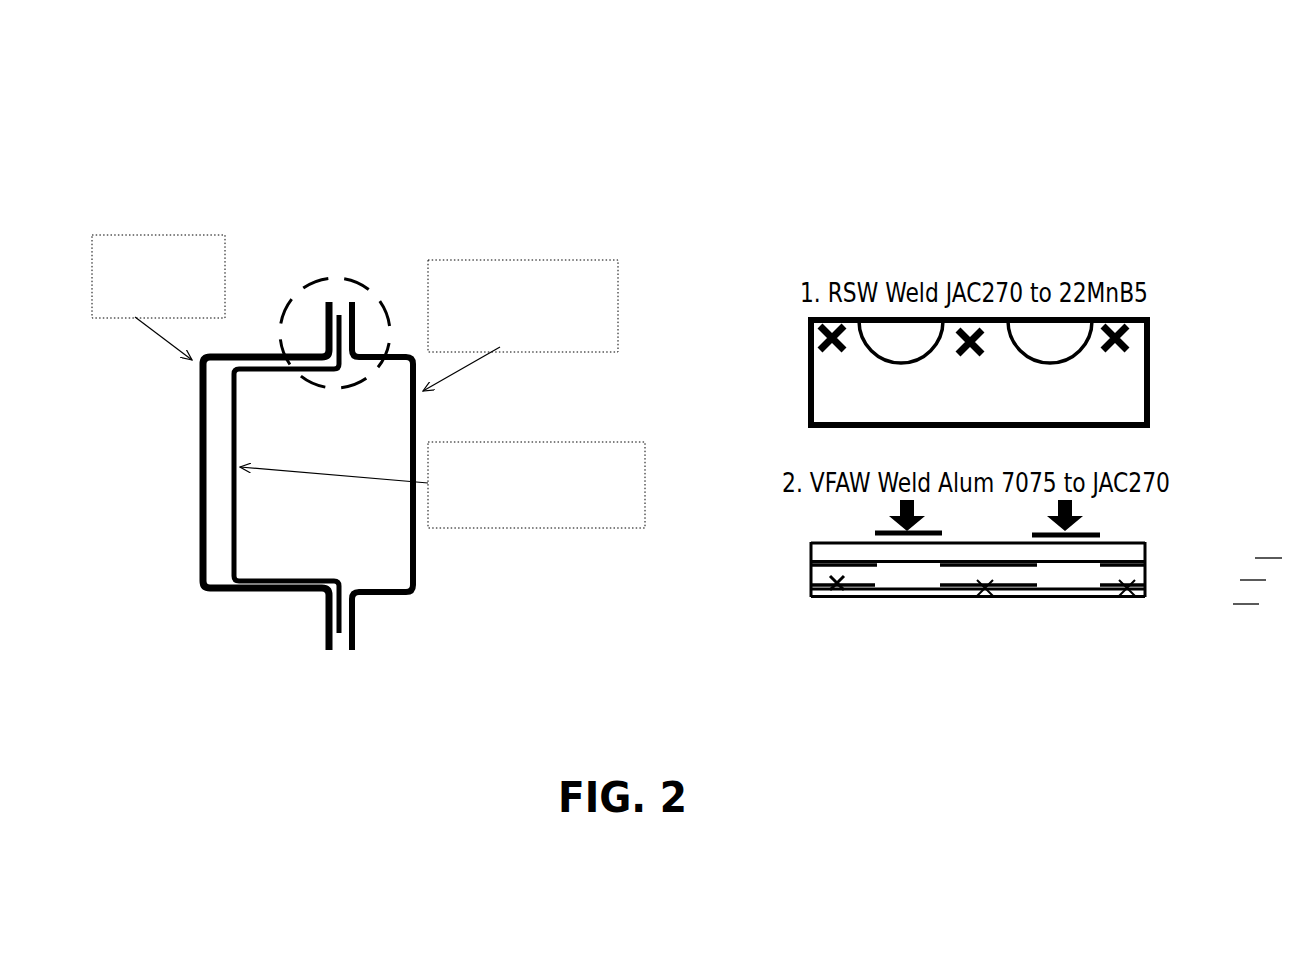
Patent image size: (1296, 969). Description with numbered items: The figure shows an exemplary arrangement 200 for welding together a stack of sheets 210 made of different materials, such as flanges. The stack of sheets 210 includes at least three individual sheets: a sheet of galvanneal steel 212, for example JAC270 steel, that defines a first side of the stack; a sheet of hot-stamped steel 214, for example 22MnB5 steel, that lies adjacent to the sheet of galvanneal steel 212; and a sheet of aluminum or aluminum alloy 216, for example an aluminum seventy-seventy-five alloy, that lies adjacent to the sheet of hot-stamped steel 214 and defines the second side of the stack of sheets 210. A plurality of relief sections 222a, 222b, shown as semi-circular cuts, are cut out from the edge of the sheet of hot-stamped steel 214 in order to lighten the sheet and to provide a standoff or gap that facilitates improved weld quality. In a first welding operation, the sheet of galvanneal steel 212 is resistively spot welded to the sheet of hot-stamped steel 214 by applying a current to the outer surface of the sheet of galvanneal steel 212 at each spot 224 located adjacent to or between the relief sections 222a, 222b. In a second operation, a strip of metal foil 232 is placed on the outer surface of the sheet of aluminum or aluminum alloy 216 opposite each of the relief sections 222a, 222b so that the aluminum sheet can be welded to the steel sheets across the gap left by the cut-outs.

The multi-material joint assembly 200 is at (92, 72).
The stack of sheets 210 is at (310, 280).
The sheet of galvanneal steel 212 is at (126, 232).
The sheet of hot-stamped steel 214 is at (598, 440).
The sheet of aluminum or aluminum alloy 216 is at (504, 255).
The relief section 222a is at (902, 334).
The relief section 222b is at (1051, 334).
The spot 224 is at (825, 338).
The strip of metal foil 232 is at (868, 531).